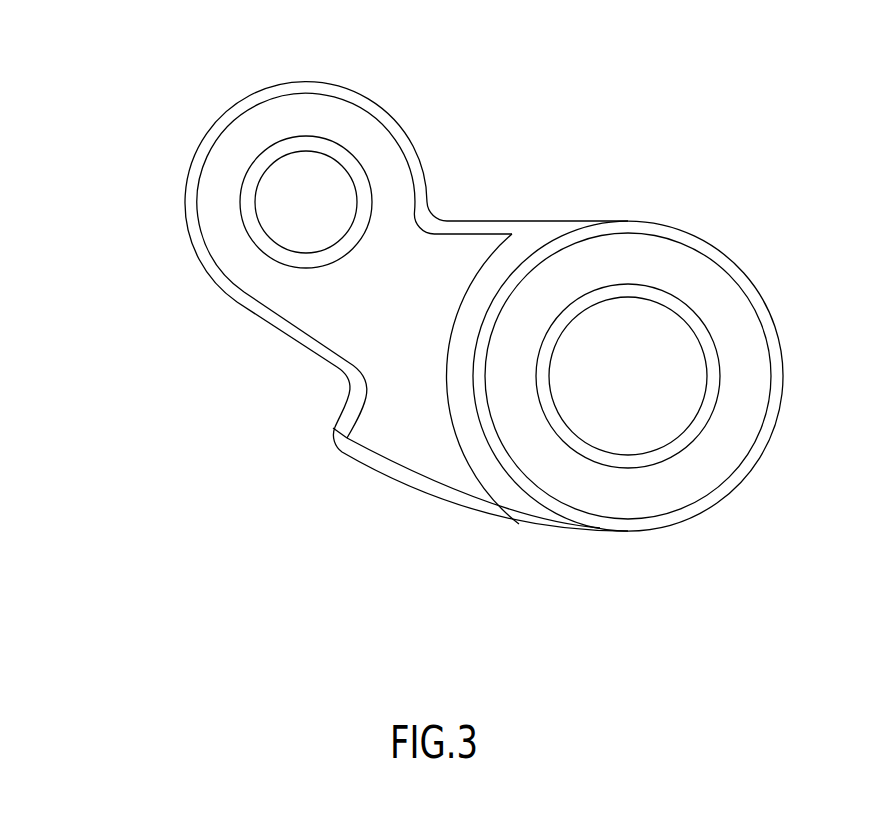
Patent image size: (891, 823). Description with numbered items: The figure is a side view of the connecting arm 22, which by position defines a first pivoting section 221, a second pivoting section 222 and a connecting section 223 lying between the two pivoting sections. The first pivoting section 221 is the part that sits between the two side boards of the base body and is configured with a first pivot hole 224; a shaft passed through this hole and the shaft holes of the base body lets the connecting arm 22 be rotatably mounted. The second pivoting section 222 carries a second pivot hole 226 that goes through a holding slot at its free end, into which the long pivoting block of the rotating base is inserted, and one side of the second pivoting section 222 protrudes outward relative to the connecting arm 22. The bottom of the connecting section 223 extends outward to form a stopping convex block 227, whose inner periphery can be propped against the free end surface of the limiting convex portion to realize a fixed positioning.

The connecting arm 22 is at (236, 76).
The first pivoting section 221 is at (306, 384).
The second pivoting section 222 is at (645, 612).
The connecting section 223 is at (457, 530).
The first pivot hole 224 is at (300, 193).
The second pivot hole 226 is at (676, 412).
The stopping convex block 227 is at (329, 430).